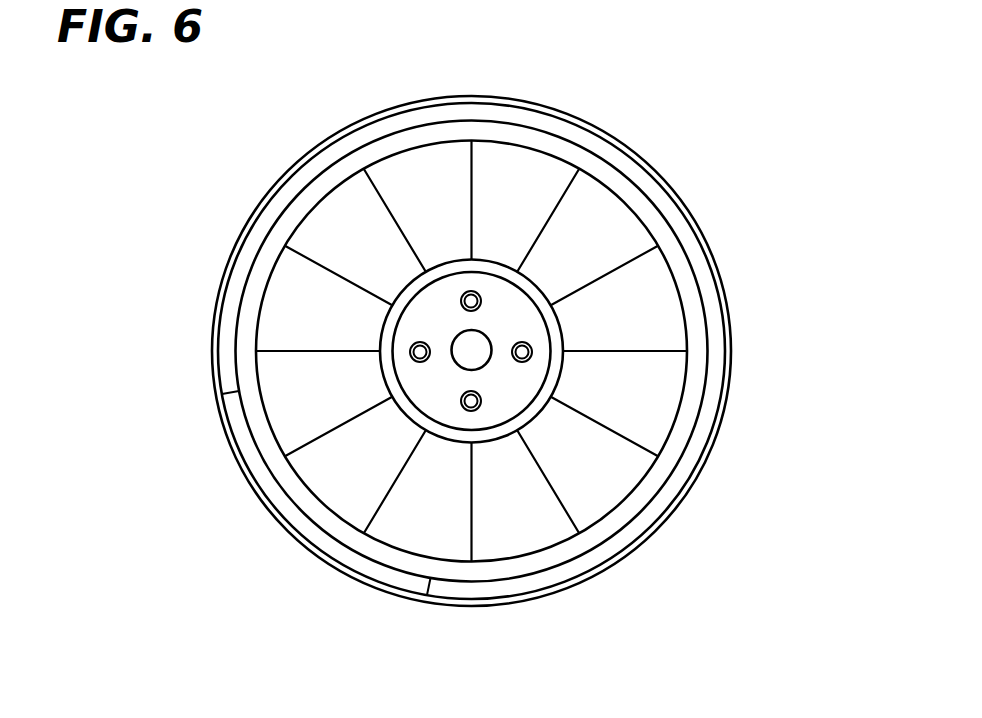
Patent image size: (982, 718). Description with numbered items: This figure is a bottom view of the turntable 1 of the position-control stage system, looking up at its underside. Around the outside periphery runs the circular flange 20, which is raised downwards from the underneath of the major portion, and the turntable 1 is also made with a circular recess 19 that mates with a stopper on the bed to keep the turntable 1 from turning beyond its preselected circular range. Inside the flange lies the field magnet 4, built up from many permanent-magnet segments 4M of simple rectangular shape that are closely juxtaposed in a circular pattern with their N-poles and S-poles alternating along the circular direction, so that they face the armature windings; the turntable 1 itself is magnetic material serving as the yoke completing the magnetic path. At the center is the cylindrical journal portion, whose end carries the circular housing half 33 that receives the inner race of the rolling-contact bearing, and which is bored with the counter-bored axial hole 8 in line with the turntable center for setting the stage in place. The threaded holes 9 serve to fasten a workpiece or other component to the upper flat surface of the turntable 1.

The turntable 1 is at (613, 125).
The circular flange 20 is at (653, 185).
The circular recess 19 is at (342, 553).
The field magnet 4 is at (683, 370).
The permanent-magnet segments 4M is at (395, 173).
The circular housing half 33 is at (386, 364).
The axial hole 8 is at (460, 343).
The threaded holes 9 is at (424, 362).